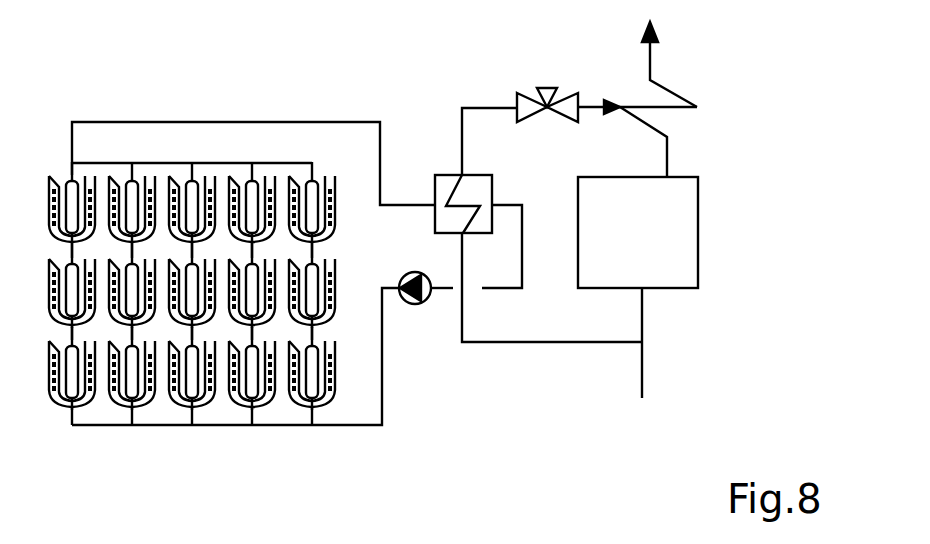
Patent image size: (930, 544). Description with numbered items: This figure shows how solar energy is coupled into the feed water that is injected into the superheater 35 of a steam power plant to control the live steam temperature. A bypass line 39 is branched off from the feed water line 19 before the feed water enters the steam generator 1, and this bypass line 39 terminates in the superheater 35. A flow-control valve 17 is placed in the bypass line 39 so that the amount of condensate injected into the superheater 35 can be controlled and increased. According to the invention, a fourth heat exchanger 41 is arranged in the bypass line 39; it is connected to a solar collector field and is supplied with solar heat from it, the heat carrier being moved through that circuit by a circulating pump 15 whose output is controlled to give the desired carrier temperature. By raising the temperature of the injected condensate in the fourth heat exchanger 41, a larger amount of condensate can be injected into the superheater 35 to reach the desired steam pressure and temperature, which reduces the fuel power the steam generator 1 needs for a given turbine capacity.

The steam generator 1 is at (698, 218).
The circulating pump 15 is at (419, 302).
The flow-control valve 17 is at (527, 93).
The feed water line 19 is at (642, 386).
The superheater 35 is at (687, 87).
The bypass line 39 is at (462, 120).
The fourth heat exchanger 41 is at (435, 175).